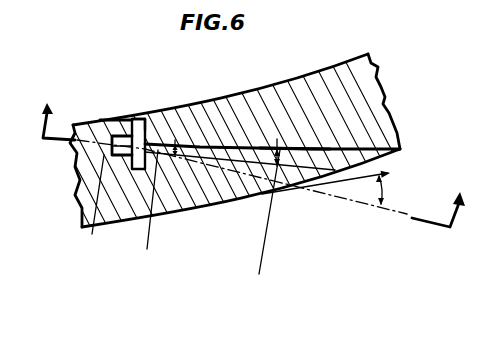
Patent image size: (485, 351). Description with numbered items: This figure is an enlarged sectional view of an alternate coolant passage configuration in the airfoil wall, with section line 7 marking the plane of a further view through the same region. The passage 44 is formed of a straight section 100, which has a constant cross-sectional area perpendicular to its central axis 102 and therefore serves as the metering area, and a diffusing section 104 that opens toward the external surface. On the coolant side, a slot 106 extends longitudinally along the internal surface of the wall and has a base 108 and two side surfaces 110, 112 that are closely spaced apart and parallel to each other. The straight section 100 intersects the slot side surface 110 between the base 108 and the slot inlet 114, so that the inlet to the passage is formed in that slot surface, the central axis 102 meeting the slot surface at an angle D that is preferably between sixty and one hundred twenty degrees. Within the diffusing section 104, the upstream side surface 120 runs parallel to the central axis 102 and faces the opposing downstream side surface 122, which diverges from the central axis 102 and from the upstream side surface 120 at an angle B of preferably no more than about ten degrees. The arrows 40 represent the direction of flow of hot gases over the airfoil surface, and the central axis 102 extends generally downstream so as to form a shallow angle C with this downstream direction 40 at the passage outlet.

The section line 7— 7 is at (253, 154).
The arrows representing direction of flow 40 is at (313, 197).
The passage 44 is at (234, 143).
The straight section 100 is at (147, 246).
The central axis 102 is at (360, 203).
The diffusing section 104 is at (259, 272).
The slot 106 is at (131, 126).
The base 108 is at (137, 173).
The side surface 110 is at (148, 120).
The side surface 112 is at (132, 124).
The slot inlet 114 is at (138, 118).
The side surface 120 is at (209, 167).
The side surface 122 is at (291, 151).
The angle B is at (276, 143).
The angle C is at (384, 190).
The angle D is at (171, 139).